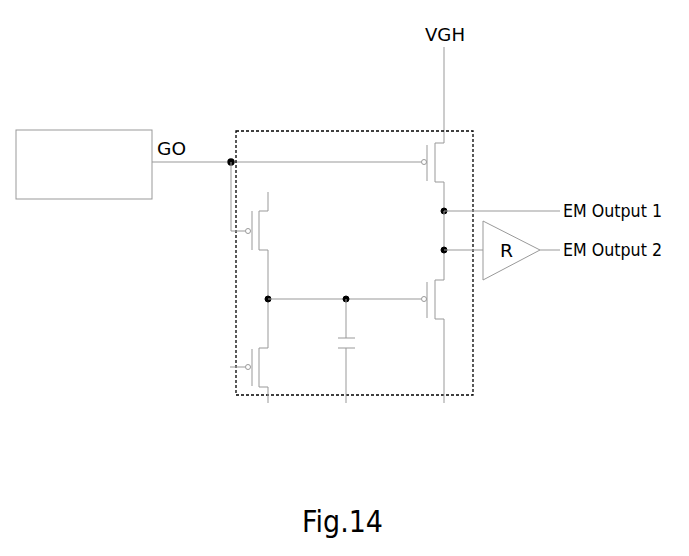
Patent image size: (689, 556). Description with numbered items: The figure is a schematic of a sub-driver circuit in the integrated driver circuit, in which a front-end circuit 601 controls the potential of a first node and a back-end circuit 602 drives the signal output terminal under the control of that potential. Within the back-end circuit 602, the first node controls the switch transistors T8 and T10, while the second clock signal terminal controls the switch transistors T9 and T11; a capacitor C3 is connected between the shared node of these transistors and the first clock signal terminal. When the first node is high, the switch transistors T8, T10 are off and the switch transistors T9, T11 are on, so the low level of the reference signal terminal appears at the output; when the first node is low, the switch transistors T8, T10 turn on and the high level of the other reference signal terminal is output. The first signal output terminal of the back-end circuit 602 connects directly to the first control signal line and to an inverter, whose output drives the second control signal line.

The front-end circuit 601 is at (80, 199).
The back-end circuit 602 is at (385, 395).
The switch transistor T8 is at (259, 255).
The switch transistor T9 is at (259, 375).
The switch transistor T10 is at (444, 177).
The switch transistor T11 is at (405, 341).
The capacitor C3 is at (361, 351).